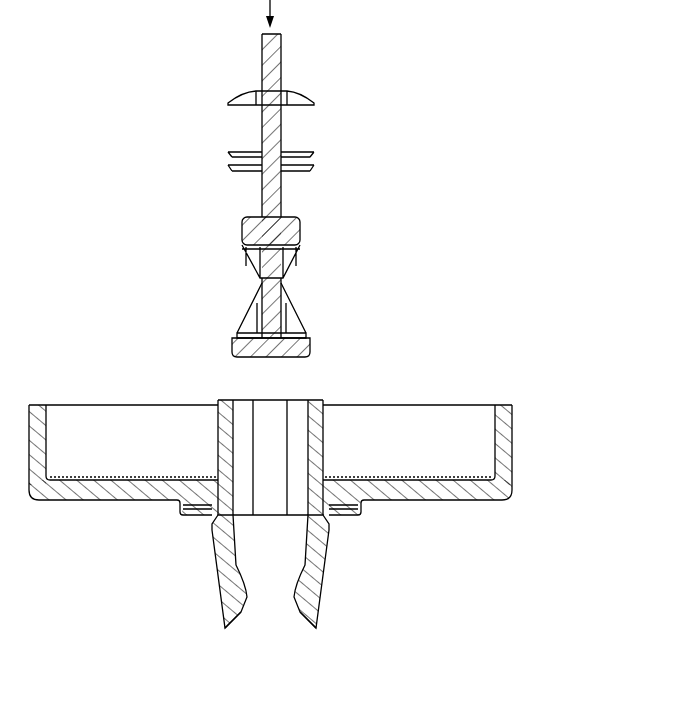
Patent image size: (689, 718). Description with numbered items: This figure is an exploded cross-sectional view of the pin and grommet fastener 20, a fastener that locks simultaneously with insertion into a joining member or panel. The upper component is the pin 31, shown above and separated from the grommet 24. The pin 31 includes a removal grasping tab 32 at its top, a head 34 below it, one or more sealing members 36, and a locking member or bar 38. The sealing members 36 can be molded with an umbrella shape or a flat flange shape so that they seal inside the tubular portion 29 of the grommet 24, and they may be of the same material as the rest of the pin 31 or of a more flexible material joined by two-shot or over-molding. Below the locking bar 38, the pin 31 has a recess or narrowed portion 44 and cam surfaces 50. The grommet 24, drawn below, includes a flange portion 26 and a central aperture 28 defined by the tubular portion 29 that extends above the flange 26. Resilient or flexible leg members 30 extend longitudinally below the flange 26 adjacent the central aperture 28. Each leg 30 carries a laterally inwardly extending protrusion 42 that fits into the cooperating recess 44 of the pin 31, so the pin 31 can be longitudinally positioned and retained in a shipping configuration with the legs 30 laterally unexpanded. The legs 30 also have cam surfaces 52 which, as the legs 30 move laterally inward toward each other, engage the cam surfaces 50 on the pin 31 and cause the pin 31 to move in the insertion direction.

The pin and grommet fastener 20 is at (129, 82).
The grommet 24 is at (520, 441).
The flange portion 26 is at (103, 497).
The central aperture 28 is at (272, 415).
The tubular portion 29 is at (318, 423).
The leg members 30 is at (220, 550).
The pin 31 is at (326, 188).
The removal grasping tab 32 is at (280, 57).
The head 34 is at (240, 100).
The sealing members 36 is at (236, 167).
The locking member or bar 38 is at (300, 232).
The laterally inwardly extending protrusion 42 is at (275, 612).
The recess or narrowed portion 44 is at (241, 295).
The cam surface 50 is at (245, 326).
The cam surface 52 is at (240, 622).